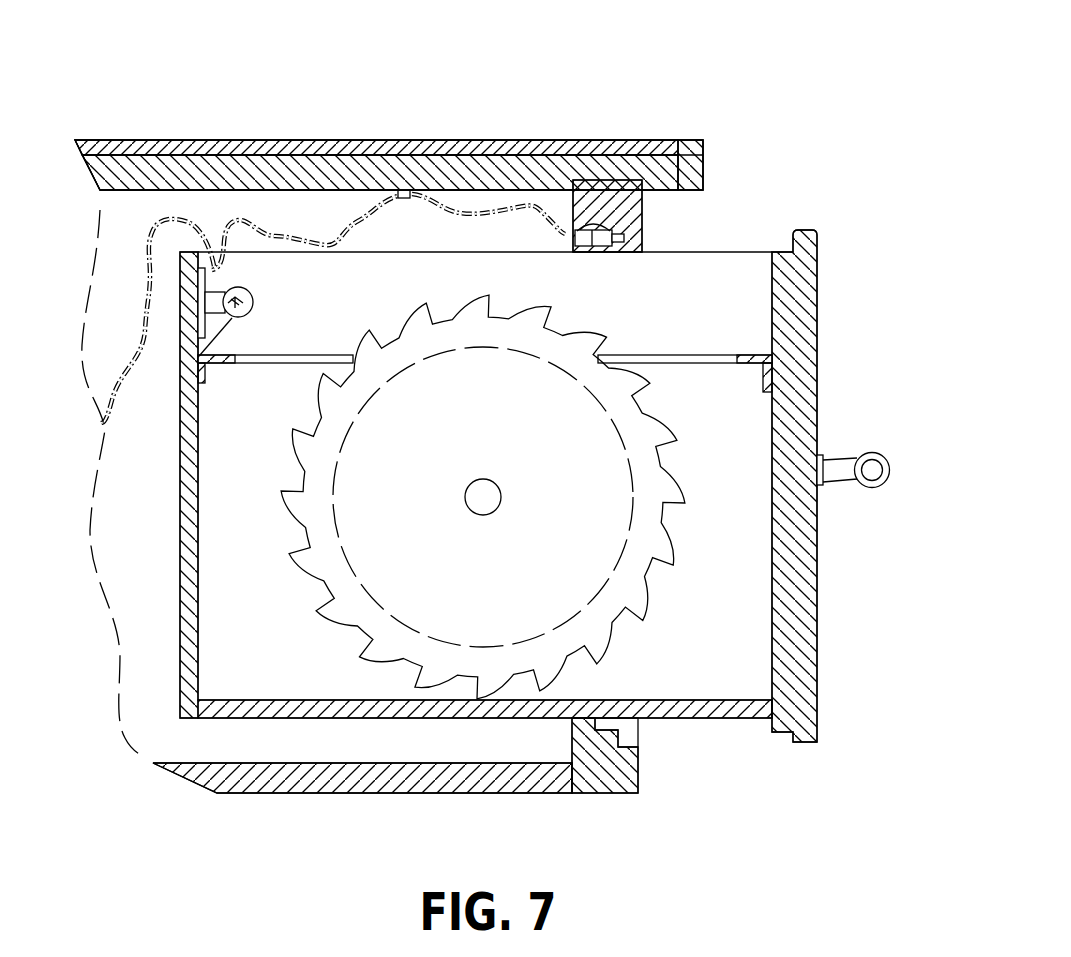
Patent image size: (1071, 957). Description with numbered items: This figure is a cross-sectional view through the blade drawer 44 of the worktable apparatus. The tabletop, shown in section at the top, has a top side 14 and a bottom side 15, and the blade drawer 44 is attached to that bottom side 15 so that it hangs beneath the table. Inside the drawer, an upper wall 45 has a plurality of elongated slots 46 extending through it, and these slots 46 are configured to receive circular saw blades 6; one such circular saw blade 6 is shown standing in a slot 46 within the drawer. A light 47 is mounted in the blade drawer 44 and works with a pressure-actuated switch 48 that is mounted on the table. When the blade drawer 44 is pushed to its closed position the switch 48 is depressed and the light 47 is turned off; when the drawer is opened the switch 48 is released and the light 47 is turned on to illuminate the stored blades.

The top side 14 is at (697, 140).
The bottom side 15 is at (670, 190).
The pressure-actuated switch 48 is at (568, 237).
The circular saw blade 6 is at (605, 337).
The elongated slot 46 is at (710, 358).
The upper wall 45 is at (763, 366).
The blade drawer 44 is at (800, 742).
The light 47 is at (196, 359).